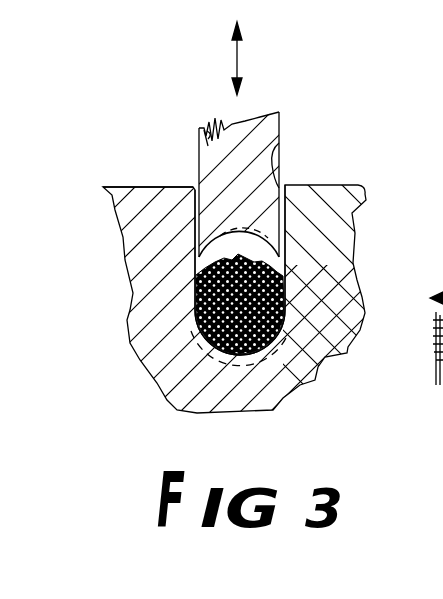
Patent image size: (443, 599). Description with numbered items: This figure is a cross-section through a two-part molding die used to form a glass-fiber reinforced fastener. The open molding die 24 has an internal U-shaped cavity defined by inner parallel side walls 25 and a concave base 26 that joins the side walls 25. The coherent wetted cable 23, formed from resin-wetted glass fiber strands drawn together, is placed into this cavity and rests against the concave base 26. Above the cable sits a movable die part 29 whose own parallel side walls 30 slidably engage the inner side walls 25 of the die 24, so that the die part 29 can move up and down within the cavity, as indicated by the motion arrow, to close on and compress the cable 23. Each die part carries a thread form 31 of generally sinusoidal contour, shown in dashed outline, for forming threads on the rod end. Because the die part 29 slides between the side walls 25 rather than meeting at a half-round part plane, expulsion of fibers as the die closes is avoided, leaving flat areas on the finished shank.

The wetted cable 23 is at (286, 296).
The open molding die 24 is at (347, 242).
The inner parallel side walls 25 is at (280, 143).
The concave base 26 is at (286, 327).
The movable die part 29 is at (198, 128).
The parallel side walls 30 is at (172, 186).
The thread form 31 is at (263, 228).